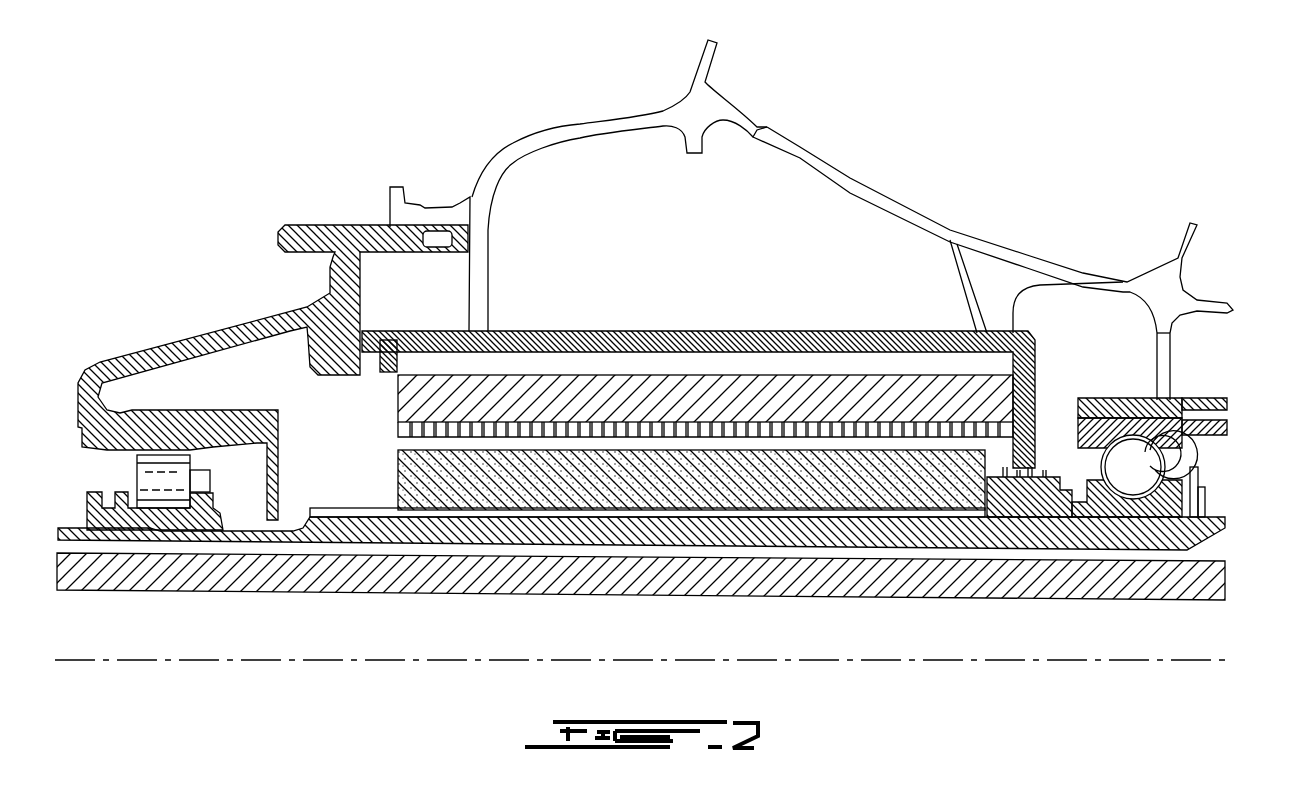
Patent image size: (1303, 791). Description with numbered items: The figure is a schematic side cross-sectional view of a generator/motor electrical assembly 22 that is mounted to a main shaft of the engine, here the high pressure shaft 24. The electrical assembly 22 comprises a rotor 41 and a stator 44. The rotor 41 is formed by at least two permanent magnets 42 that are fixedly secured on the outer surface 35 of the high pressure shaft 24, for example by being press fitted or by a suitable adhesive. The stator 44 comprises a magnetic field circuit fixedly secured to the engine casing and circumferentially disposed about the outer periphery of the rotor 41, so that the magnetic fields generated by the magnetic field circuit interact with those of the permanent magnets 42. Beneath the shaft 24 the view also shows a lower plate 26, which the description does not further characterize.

The generator/motor electrical assembly 22 is at (853, 288).
The stator 44 is at (743, 393).
The rotor 41 is at (990, 467).
The high pressure shaft 24 is at (1225, 530).
The ground plate 26 is at (1005, 587).
The permanent magnets 42 is at (738, 493).
The outer surface 35 is at (820, 490).